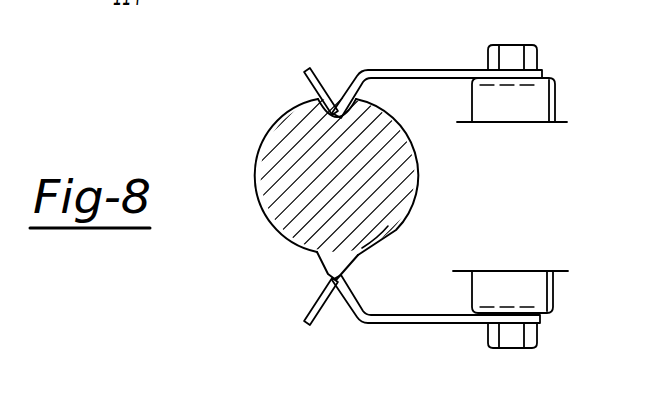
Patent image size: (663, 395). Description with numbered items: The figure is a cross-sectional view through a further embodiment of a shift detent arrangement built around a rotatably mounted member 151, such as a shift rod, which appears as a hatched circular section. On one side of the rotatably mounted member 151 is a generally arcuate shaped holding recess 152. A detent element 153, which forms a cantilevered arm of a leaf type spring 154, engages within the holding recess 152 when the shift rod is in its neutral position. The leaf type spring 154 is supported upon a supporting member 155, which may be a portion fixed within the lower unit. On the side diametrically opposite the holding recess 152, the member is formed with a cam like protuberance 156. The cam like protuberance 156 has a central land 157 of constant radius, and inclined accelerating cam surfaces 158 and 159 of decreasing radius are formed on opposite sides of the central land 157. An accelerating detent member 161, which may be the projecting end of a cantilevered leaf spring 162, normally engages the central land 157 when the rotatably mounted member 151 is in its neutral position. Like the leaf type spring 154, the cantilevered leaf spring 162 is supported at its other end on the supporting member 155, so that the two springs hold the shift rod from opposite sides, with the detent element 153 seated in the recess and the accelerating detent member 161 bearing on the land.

The rotatably mounted member 151 is at (266, 188).
The holding recess 152 is at (330, 96).
The detent element 153 is at (368, 73).
The leaf type spring 154 is at (421, 69).
The supporting member 155 is at (549, 100).
The cam like protuberance 156 is at (320, 268).
The central land 157 is at (350, 297).
The accelerating cam surface 158 is at (316, 254).
The accelerating cam surface 159 is at (358, 252).
The accelerating detent member 161 is at (320, 283).
The cantilevered leaf spring 162 is at (428, 318).